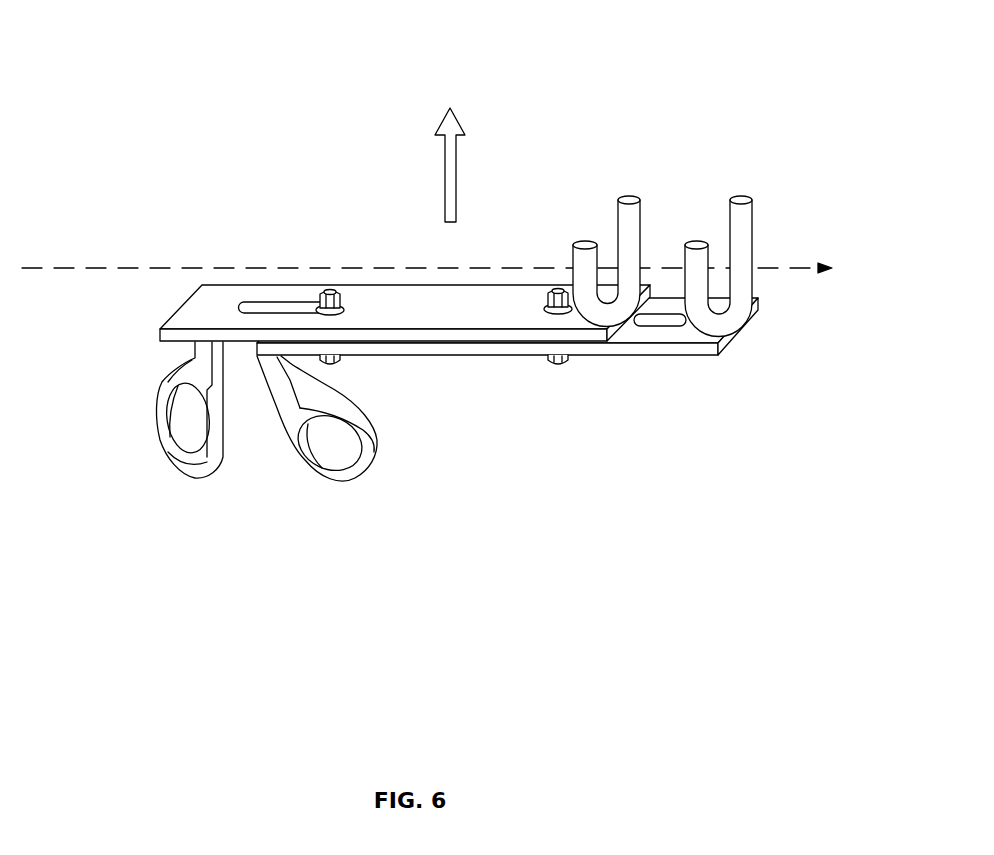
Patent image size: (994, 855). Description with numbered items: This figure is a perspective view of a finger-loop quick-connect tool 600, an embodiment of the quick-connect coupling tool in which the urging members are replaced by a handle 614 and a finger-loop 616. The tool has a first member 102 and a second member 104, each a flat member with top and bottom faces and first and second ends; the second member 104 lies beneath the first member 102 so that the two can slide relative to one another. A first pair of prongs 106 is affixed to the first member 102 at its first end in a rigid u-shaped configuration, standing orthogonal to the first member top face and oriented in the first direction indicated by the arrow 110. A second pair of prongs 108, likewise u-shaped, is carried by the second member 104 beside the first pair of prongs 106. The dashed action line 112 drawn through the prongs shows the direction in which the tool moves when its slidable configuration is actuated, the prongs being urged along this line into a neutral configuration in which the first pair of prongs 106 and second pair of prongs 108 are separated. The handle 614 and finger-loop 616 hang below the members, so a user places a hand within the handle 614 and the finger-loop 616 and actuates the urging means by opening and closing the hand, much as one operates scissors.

The finger-loop quick-connect tool 600 is at (760, 97).
The first member 102 is at (417, 334).
The second member 104 is at (670, 352).
The first pair of prongs 106 is at (636, 220).
The second pair of prongs 108 is at (743, 228).
The arrow 110 is at (455, 148).
The action line 112 is at (110, 268).
The handle 614 is at (155, 430).
The finger-loop 616 is at (343, 480).